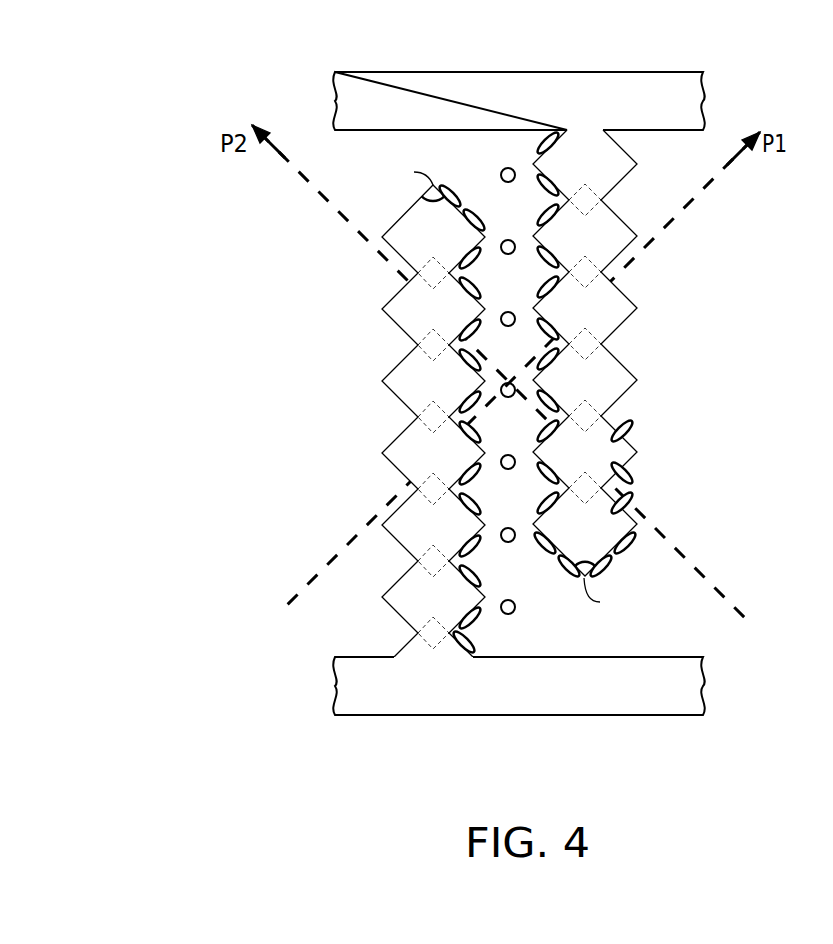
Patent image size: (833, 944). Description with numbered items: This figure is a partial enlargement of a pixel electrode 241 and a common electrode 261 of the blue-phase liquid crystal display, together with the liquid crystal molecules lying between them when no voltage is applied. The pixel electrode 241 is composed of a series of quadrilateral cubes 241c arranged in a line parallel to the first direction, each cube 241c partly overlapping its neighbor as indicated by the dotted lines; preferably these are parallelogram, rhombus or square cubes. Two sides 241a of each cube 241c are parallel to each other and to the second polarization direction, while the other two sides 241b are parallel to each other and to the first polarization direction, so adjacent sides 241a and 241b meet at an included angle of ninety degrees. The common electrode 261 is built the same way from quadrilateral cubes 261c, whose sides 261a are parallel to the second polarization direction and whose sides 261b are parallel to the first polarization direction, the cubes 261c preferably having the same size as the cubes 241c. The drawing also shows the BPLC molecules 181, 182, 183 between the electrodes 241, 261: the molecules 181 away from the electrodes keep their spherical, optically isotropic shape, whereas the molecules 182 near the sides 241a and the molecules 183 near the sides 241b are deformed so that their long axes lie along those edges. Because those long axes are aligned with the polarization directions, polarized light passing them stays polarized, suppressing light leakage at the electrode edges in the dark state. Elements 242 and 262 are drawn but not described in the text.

The BPLC molecules 181 is at (507, 167).
The BPLC molecules 182 is at (473, 222).
The BPLC molecules 183 is at (473, 257).
The pixel electrode 241 is at (337, 408).
The sides 241a is at (473, 366).
The sides 241b is at (473, 400).
The quadrilateral cubes 241c is at (335, 387).
The first trunk electrode 242 is at (697, 692).
The common electrode 261 is at (665, 375).
The sides 261a is at (550, 325).
The sides 261b is at (548, 290).
The quadrilateral cubes 261c is at (667, 310).
The second trunk electrode 262 is at (697, 98).